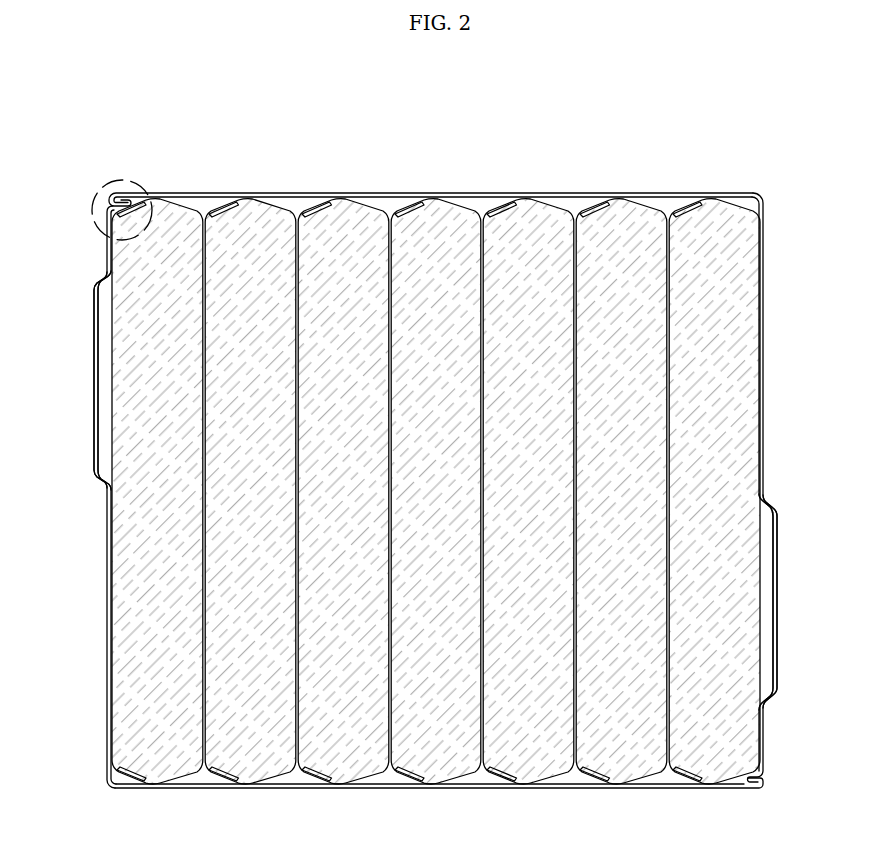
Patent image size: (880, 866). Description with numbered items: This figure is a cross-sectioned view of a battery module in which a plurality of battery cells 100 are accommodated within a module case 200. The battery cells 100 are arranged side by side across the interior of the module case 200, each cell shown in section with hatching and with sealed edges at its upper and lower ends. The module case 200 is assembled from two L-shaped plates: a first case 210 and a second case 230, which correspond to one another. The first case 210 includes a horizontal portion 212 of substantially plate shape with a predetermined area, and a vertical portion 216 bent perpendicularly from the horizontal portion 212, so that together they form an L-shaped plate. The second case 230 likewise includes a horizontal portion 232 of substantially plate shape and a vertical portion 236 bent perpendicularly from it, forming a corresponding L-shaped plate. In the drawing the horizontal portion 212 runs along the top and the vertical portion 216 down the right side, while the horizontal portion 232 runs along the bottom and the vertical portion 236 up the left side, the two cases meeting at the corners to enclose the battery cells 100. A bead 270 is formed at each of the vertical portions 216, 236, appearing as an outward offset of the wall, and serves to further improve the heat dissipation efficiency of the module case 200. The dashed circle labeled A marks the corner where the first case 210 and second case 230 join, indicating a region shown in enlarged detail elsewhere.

The battery cell 100 is at (156, 735).
The module case 200 is at (619, 124).
The first case 210 is at (771, 180).
The horizontal portion 212 is at (250, 193).
The vertical portion 216 is at (766, 420).
The second case 230 is at (105, 800).
The horizontal portion 232 is at (529, 789).
The vertical portion 236 is at (107, 570).
The bead 270 is at (94, 382).
The detail region A is at (100, 212).